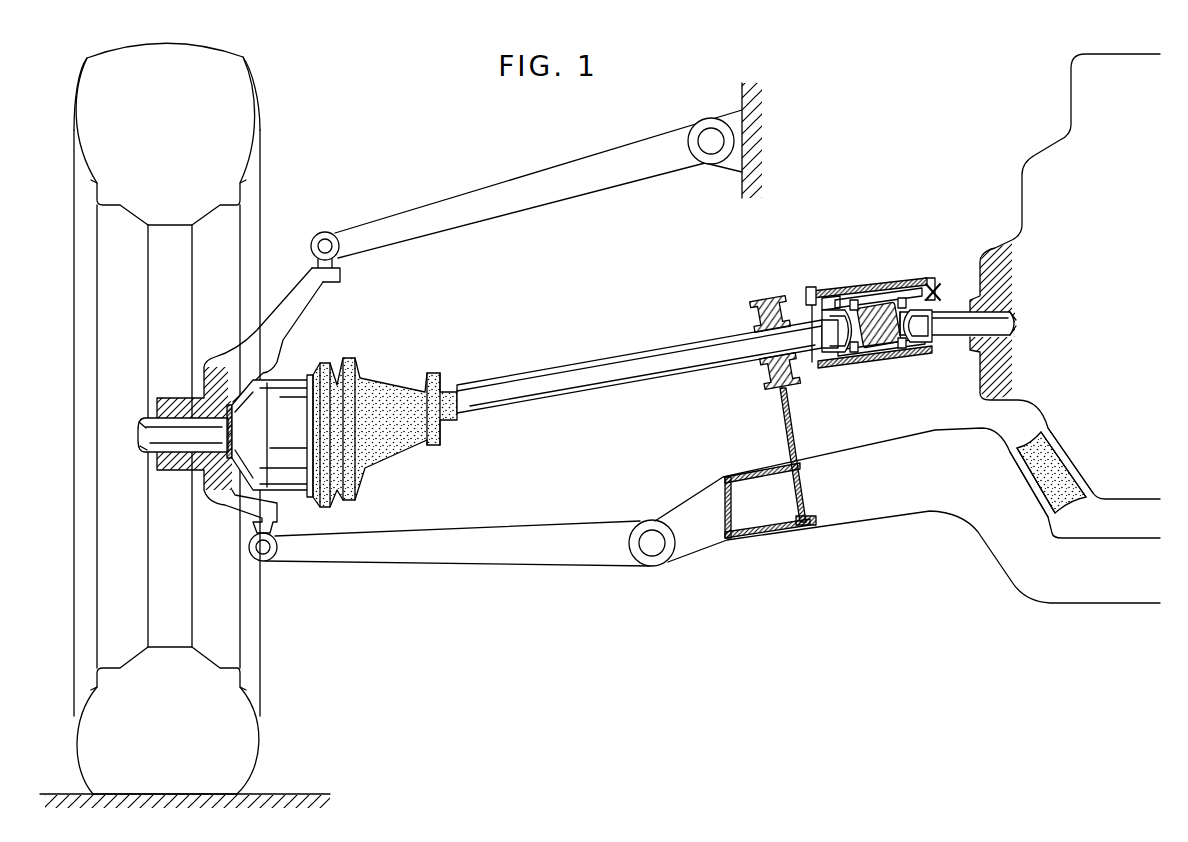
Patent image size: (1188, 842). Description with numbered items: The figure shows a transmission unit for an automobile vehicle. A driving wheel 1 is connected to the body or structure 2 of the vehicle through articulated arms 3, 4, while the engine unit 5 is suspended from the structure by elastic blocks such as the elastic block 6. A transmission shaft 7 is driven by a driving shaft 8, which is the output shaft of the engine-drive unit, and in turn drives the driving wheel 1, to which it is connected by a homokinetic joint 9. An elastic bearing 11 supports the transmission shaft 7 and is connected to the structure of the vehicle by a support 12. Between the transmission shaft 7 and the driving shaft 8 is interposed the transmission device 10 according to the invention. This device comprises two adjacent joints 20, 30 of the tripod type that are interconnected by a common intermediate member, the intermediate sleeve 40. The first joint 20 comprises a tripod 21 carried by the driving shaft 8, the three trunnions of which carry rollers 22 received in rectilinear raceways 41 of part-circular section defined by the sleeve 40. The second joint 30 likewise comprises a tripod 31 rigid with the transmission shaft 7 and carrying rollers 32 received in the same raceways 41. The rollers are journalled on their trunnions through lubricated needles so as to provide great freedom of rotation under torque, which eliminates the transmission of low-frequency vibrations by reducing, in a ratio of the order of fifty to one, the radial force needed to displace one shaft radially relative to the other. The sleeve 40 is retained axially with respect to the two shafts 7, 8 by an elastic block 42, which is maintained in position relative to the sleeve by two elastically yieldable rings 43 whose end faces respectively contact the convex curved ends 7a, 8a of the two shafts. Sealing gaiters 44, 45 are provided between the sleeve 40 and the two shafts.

The driving wheel 1 is at (253, 652).
The body or structure 2 is at (766, 150).
The articulated arm 3 is at (461, 567).
The articulated arm 4 is at (478, 186).
The engine unit 5 is at (1063, 175).
The elastic block 6 is at (1058, 480).
The transmission shaft 7 is at (658, 350).
The convex curved end of transmission shaft 7a is at (853, 300).
The driving shaft 8 is at (988, 326).
The convex curved end of driving shaft 8a is at (905, 298).
The homokinetic joint 9 is at (396, 393).
The transmission device 10 is at (872, 282).
The elastic bearing 11 is at (752, 318).
The support 12 is at (780, 418).
The first joint 20 is at (934, 287).
The tripod 21 is at (930, 322).
The rollers 22 is at (940, 300).
The second joint 30 is at (806, 296).
The tripod 31 is at (840, 352).
The rollers 32 is at (830, 297).
The intermediate sleeve 40 is at (838, 292).
The rectilinear raceways 41 is at (882, 298).
The elastic block 42 is at (880, 350).
The elastically yieldable rings 43 is at (860, 352).
The sealing gaiter 44 is at (947, 344).
The sealing gaiter 45 is at (828, 352).